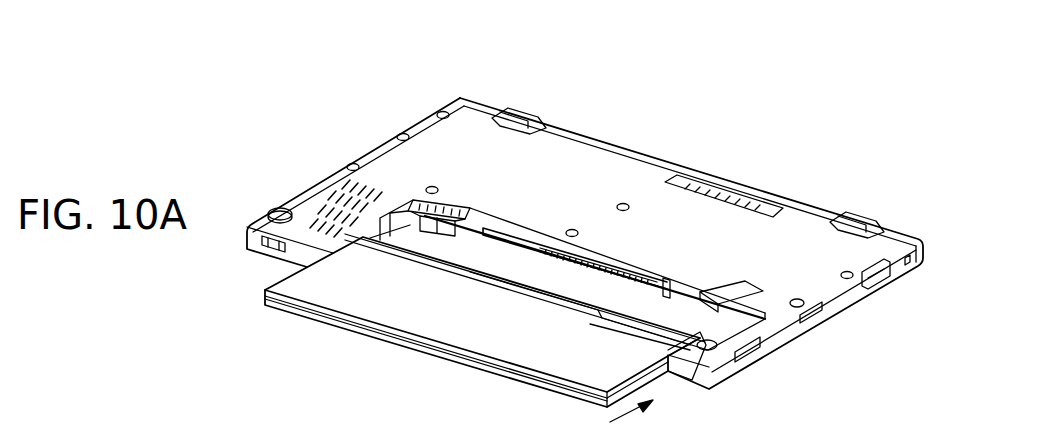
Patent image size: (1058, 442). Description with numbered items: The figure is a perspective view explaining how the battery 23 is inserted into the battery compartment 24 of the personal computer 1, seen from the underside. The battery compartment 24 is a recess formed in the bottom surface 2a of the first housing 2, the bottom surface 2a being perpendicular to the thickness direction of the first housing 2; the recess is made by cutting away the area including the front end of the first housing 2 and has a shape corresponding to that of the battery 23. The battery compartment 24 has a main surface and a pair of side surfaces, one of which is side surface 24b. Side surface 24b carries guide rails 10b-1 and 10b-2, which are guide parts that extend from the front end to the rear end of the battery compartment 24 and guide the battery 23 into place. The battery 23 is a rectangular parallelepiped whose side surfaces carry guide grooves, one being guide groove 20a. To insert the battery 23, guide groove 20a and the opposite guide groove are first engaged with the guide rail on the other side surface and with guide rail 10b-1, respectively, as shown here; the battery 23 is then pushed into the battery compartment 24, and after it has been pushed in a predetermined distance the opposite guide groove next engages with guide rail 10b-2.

The personal computer 1 is at (819, 172).
The first housing 2 is at (432, 117).
The bottom surface 2a is at (558, 152).
The guide rail 10b-1 is at (360, 230).
The guide rail 10b-2 is at (400, 212).
The guide groove 20a is at (658, 375).
The battery 23 is at (437, 320).
The battery compartment 24 is at (465, 255).
The side surface 24b is at (403, 198).